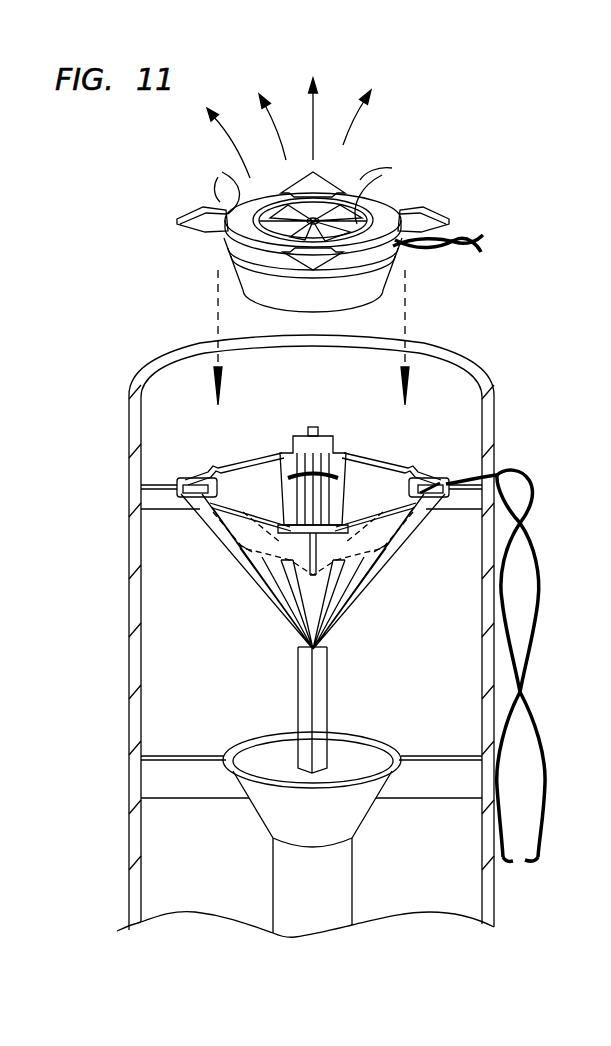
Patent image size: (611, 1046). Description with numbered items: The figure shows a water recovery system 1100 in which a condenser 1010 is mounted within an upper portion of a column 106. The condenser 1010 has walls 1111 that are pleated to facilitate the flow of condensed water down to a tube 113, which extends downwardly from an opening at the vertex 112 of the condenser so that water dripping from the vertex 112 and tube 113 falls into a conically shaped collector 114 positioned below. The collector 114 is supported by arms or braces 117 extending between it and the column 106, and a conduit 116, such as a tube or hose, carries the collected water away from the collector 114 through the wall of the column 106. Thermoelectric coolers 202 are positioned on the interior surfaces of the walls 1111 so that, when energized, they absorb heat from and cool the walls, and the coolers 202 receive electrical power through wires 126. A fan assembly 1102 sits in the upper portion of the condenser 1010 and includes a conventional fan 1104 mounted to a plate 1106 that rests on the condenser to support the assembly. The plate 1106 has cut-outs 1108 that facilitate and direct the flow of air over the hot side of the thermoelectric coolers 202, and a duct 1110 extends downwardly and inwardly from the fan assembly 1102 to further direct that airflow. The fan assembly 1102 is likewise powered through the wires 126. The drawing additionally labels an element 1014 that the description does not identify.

The column 106 is at (132, 690).
The vertex 112 is at (305, 650).
The tube 113 is at (325, 712).
The collector 114 is at (268, 748).
The conduit 116 is at (272, 902).
The arms or braces 117 is at (150, 770).
The wires 126 is at (502, 475).
The thermoelectric cooler 202 is at (268, 475).
The condenser 1010 is at (314, 555).
The support rods 1014 is at (313, 428).
The water recovery system 1100 is at (313, 241).
The fan assembly 1102 is at (231, 295).
The fan 1104 is at (392, 196).
The plate 1106 is at (332, 178).
The cut-outs 1108 is at (307, 151).
The duct 1110 is at (377, 289).
The walls 1111 is at (410, 533).